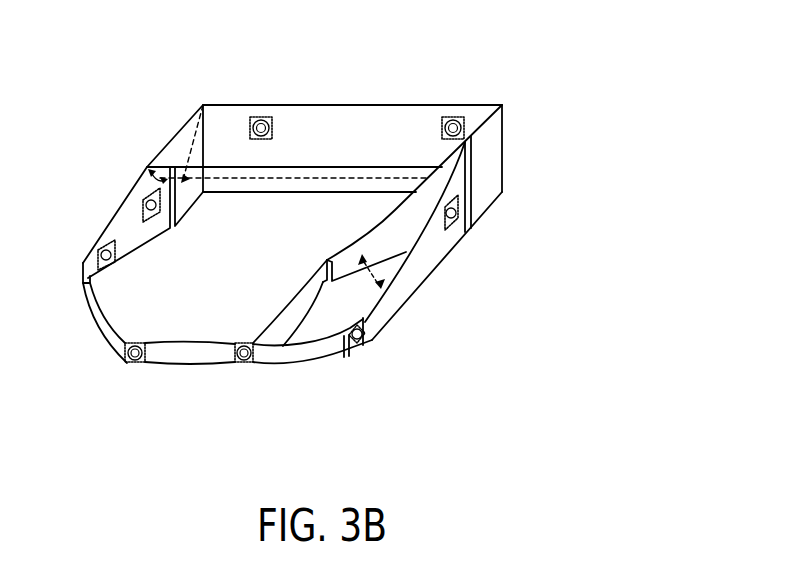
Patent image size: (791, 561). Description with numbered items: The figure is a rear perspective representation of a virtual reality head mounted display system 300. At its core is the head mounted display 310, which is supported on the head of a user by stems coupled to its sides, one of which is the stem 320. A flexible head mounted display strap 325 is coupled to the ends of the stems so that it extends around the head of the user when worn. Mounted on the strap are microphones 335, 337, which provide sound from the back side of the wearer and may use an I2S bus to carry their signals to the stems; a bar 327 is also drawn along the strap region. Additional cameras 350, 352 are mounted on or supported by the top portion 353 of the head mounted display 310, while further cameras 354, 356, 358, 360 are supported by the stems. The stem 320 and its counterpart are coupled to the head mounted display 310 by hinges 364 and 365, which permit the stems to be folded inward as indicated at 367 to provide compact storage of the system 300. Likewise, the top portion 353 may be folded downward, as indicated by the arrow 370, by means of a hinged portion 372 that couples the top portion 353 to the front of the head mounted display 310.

The virtual reality head mounted display system 300 is at (630, 71).
The head mounted display 310 is at (502, 105).
The stem 320 is at (456, 243).
The head mounted display strap 325 is at (310, 366).
The diagonal connecting bar 327 is at (300, 293).
The microphone 335 is at (244, 363).
The microphone 337 is at (134, 363).
The camera 350 is at (453, 117).
The camera 352 is at (261, 117).
The top portion 353 is at (191, 127).
The camera 354 is at (143, 201).
The camera 356 is at (98, 251).
The camera 358 is at (461, 214).
The camera 360 is at (367, 334).
The hinge 364 is at (473, 172).
The hinge 365 is at (177, 213).
The inward folding indication 367 is at (391, 216).
The arrow 370 is at (146, 175).
The hinged portion 372 is at (325, 105).